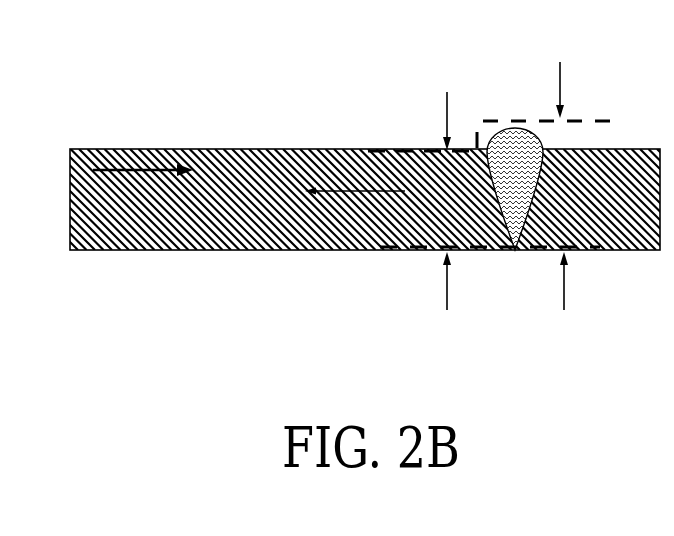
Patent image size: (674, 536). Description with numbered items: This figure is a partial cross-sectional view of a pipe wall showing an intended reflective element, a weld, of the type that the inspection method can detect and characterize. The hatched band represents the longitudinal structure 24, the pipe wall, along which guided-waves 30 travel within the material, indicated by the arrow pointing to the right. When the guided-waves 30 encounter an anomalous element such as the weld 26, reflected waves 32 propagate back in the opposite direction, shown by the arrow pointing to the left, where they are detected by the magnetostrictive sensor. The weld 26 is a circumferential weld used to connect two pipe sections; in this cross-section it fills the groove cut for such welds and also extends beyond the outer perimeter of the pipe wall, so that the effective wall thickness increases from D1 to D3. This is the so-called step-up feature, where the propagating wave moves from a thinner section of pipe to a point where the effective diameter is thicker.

The longitudinal structure 24 is at (220, 252).
The weld 26 is at (532, 140).
The guided-waves 30 is at (130, 170).
The reflected waves 32 is at (325, 191).
The wall thickness D1 is at (484, 185).
The increased effective wall thickness D3 is at (547, 171).